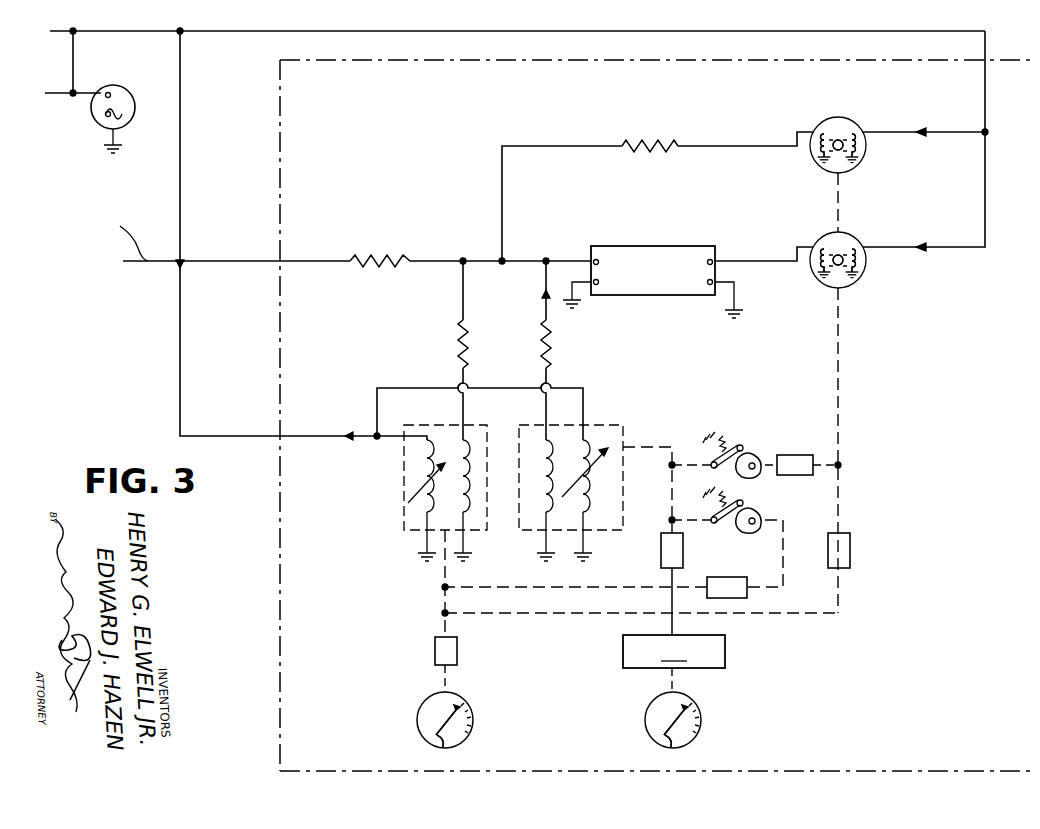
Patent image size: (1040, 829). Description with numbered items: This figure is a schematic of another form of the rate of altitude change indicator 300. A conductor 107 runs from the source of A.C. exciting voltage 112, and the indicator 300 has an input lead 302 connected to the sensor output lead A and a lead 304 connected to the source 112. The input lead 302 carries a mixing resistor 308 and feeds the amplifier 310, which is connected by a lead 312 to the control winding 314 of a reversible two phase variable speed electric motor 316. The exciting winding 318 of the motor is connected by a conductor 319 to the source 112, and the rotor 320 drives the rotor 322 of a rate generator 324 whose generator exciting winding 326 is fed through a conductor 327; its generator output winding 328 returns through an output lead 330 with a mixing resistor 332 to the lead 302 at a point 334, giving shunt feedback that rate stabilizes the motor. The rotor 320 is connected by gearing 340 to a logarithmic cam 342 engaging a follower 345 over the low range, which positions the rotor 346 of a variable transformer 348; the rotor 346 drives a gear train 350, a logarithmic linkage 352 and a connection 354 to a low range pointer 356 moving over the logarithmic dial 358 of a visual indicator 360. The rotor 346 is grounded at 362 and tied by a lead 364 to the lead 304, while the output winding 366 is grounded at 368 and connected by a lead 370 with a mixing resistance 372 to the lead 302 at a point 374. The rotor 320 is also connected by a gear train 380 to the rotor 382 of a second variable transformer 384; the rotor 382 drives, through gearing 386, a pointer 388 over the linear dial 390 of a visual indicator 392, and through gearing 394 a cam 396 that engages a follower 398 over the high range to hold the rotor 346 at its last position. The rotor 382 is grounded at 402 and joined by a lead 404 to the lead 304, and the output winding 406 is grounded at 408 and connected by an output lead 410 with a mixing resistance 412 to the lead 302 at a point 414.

The conductor 107 is at (68, 36).
The source of A.C. exciting voltage 112 is at (106, 93).
The indicator 300 is at (276, 163).
The input lead 302 is at (227, 261).
The lead 304 is at (300, 433).
The mixing resistor 308 is at (383, 255).
The amplifier 310 is at (655, 273).
The lead 312 is at (745, 260).
The control winding 314 is at (816, 272).
The reversible two phase variable speed electric motor 316 is at (849, 271).
The exciting winding 318 is at (857, 284).
The conductor 319 is at (985, 50).
The rotor 320 is at (845, 256).
The rotor 322 is at (845, 141).
The rate generator 324 is at (842, 122).
The generator exciting winding 326 is at (865, 152).
The conductor 327 is at (950, 130).
The generator output winding 328 is at (822, 147).
The output lead 330 is at (722, 146).
The mixing resistor 332 is at (653, 144).
The point 334 is at (500, 258).
The gearing 340 is at (796, 456).
The logarithmic cam 342 is at (753, 456).
The follower 345 is at (716, 462).
The rotor 346 is at (590, 483).
The variable transformer 348 is at (574, 455).
The gear train 350 is at (660, 558).
The logarithmic linkage 352 is at (674, 651).
The connection 354 is at (681, 688).
The low range pointer 356 is at (660, 742).
The logarithmic dial 358 is at (697, 728).
The visual indicator 360 is at (704, 716).
The ground 362 is at (586, 548).
The lead 364 is at (427, 388).
The output winding 366 is at (543, 476).
The ground 368 is at (543, 548).
The lead 370 is at (549, 380).
The mixing resistance 372 is at (549, 344).
The point 374 is at (548, 258).
The gear train 380 is at (853, 552).
The rotor 382 is at (420, 490).
The variable transformer 384 is at (430, 501).
The gearing 386 is at (433, 650).
The pointer 388 is at (440, 745).
The linear dial 390 is at (465, 724).
The visual indicator 392 is at (477, 712).
The gearing 394 is at (728, 577).
The cam 396 is at (757, 509).
The follower 398 is at (716, 517).
The ground 402 is at (425, 548).
The lead 404 is at (421, 435).
The output winding 406 is at (470, 480).
The ground 408 is at (465, 548).
The output lead 410 is at (466, 407).
The mixing resistance 412 is at (460, 350).
The point 414 is at (460, 258).